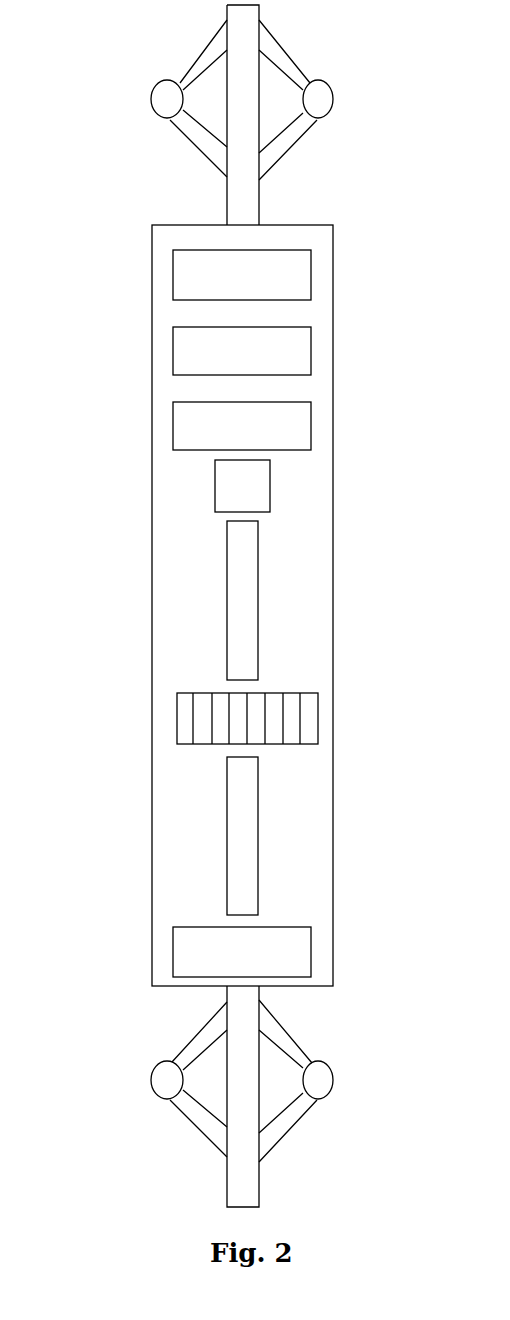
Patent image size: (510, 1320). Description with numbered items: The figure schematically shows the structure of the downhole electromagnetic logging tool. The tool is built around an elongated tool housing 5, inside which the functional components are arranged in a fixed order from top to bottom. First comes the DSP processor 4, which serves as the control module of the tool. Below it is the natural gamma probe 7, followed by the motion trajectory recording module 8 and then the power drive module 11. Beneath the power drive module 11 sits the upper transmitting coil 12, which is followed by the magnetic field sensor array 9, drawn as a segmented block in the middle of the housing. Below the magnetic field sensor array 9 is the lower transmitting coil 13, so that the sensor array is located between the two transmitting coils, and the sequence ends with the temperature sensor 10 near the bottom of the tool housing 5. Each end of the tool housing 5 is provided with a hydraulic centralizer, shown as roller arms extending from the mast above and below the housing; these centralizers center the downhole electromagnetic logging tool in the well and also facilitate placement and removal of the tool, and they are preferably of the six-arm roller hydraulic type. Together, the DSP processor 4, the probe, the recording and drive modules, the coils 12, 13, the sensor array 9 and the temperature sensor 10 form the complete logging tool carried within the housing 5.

The DSP processor 4 is at (311, 273).
The tool housing 5 is at (153, 226).
The natural gamma probe 7 is at (172, 347).
The motion trajectory recording module 8 is at (311, 420).
The magnetic field sensor array 9 is at (177, 710).
The temperature sensor 10 is at (173, 953).
The power drive module 11 is at (215, 478).
The upper transmitting coil 12 is at (258, 597).
The lower transmitting coil 13 is at (258, 832).